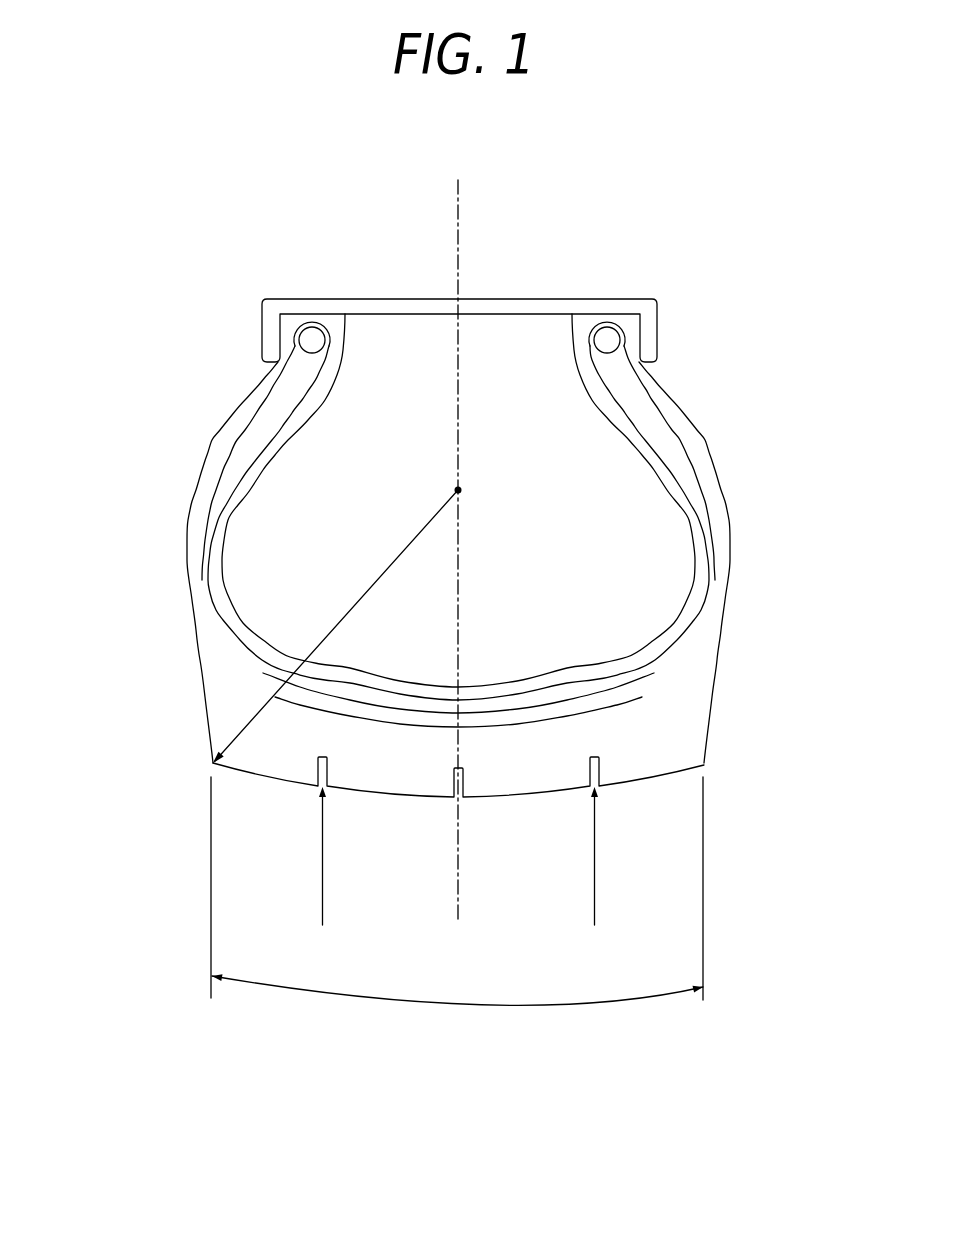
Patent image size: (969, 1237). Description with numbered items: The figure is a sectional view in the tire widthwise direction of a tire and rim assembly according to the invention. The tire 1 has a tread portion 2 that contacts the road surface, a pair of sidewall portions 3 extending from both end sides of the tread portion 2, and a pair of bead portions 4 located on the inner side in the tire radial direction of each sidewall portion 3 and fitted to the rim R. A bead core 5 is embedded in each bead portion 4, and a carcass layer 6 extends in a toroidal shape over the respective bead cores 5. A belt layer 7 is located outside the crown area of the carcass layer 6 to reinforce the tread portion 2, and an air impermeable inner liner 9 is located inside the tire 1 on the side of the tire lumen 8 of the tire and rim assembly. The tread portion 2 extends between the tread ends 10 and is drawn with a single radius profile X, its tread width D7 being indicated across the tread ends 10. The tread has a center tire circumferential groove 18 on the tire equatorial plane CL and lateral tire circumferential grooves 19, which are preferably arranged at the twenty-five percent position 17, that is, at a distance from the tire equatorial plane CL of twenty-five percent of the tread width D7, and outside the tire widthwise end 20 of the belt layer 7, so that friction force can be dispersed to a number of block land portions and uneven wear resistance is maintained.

The tire 1 is at (747, 463).
The tread portion 2 is at (250, 773).
The sidewall portion 3 is at (177, 502).
The bead portion 4 is at (252, 373).
The bead core 5 is at (312, 326).
The carcass layer 6 is at (212, 608).
The belt layer 7 is at (642, 698).
The tire lumen 8 is at (377, 461).
The inner liner 9 is at (573, 337).
The tread end 10 is at (210, 763).
The 25% position 17 is at (458, 870).
The center tire circumferential groove 18 is at (463, 798).
The lateral tire circumferential groove 19 is at (318, 782).
The tire widthwise end of the belt layer 20 is at (268, 677).
The rim R is at (663, 317).
The tire equatorial plane CL is at (460, 531).
The single radius profile X is at (337, 625).
The tread width D7 is at (457, 910).